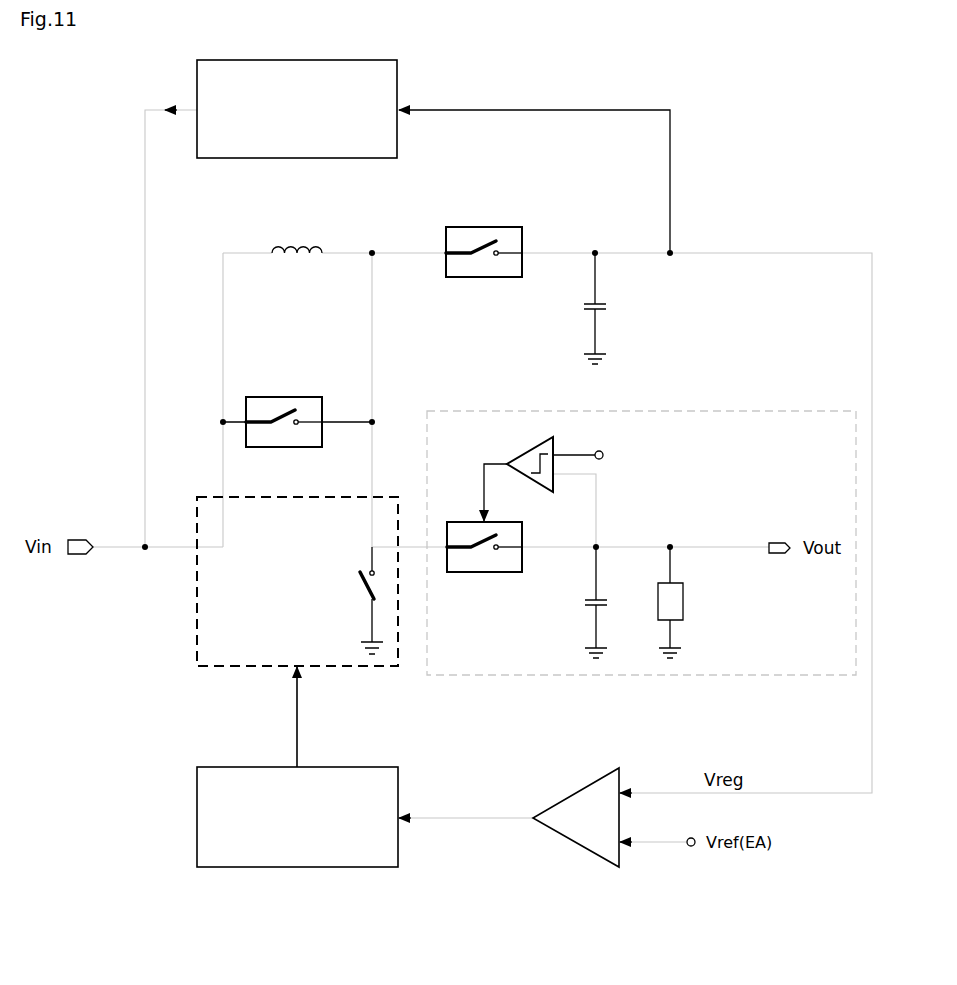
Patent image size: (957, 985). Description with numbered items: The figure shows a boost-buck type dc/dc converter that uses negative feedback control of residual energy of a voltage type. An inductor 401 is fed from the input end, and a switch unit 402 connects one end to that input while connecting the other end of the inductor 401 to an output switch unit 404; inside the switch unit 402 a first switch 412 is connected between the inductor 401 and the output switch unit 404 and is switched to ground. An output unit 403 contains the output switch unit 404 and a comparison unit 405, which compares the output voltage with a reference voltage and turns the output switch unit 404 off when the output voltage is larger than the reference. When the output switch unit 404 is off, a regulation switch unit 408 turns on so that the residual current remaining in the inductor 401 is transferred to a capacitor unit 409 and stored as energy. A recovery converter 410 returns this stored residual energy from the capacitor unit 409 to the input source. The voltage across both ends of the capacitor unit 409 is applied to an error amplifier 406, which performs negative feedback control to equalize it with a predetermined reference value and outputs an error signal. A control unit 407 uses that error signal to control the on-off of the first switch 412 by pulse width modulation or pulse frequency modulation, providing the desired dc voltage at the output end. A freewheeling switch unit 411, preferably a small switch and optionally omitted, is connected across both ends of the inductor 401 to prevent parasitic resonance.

The inductor 401 is at (304, 241).
The switch unit 402 is at (220, 668).
The output unit 403 is at (836, 411).
The output switch unit 404 is at (483, 573).
The comparison unit 405 is at (530, 450).
The error amplifier 406 is at (575, 846).
The control unit 407 is at (218, 868).
The regulation switch unit 408 is at (483, 227).
The capacitor unit 409 is at (585, 306).
The recovery converter 410 is at (278, 159).
The freewheeling switch unit 411 is at (246, 409).
The first switch 412 is at (358, 585).